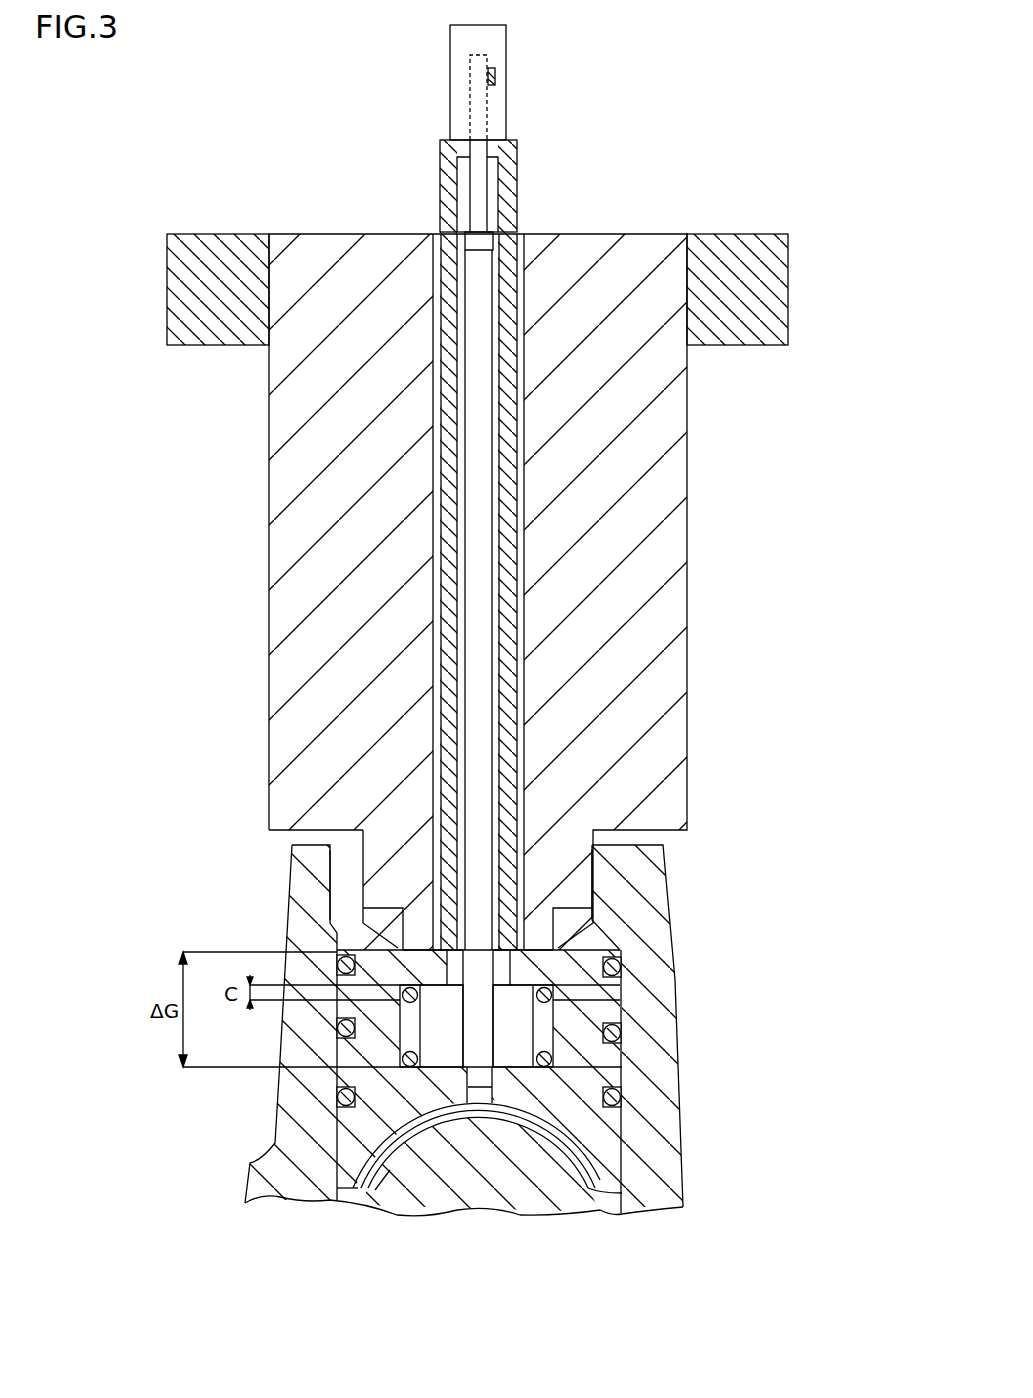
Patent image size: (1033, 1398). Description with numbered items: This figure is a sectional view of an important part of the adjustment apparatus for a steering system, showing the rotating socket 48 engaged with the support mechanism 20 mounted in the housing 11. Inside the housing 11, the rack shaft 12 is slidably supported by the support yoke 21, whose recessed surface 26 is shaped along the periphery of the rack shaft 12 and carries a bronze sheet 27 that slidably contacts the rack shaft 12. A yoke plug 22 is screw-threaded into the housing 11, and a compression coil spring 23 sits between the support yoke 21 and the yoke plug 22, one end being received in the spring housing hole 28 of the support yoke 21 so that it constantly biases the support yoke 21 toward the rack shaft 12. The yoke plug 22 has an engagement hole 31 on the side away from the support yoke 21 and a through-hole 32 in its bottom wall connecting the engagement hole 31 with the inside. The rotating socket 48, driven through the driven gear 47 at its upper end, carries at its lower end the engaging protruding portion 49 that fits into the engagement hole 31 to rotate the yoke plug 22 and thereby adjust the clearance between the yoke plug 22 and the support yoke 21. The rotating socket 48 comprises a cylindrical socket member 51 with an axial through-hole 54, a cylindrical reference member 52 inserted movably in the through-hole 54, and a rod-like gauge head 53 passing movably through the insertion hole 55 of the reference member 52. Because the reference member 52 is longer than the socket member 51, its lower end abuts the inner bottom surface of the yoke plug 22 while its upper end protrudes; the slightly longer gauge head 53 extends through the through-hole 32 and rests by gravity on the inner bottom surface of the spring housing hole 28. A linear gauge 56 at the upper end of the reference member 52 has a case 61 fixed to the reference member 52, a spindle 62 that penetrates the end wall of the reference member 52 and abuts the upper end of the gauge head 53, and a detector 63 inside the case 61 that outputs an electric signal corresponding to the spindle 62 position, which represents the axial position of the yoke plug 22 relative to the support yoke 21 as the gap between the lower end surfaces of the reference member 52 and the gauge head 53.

The housing 11 is at (272, 1172).
The rack shaft 12 is at (500, 1196).
The support mechanism 20 is at (560, 1001).
The support yoke 21 is at (733, 930).
The yoke plug 22 is at (618, 930).
The compression coil spring 23 is at (600, 998).
The recessed surface 26 is at (378, 1193).
The sheet 27 is at (624, 1193).
The spring housing hole 28 is at (458, 1039).
The engagement hole 31 is at (372, 892).
The through-hole 32 is at (508, 995).
The driven gear 47 is at (748, 347).
The rotating socket 48 is at (477, 555).
The engaging protruding portion 49 is at (590, 892).
The socket member 51 is at (690, 457).
The reference member 52 is at (505, 477).
The gauge head 53 is at (495, 531).
The through-hole 54 is at (440, 462).
The insertion hole 55 is at (460, 534).
The linear gauge 56 is at (540, 137).
The case 61 is at (507, 105).
The spindle 62 is at (518, 160).
The detector 63 is at (497, 77).